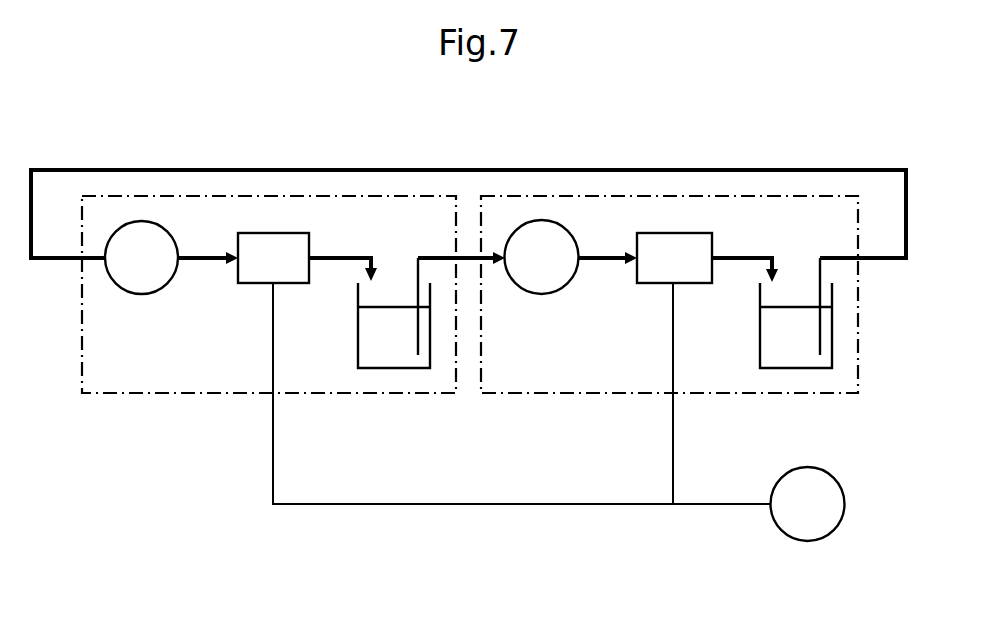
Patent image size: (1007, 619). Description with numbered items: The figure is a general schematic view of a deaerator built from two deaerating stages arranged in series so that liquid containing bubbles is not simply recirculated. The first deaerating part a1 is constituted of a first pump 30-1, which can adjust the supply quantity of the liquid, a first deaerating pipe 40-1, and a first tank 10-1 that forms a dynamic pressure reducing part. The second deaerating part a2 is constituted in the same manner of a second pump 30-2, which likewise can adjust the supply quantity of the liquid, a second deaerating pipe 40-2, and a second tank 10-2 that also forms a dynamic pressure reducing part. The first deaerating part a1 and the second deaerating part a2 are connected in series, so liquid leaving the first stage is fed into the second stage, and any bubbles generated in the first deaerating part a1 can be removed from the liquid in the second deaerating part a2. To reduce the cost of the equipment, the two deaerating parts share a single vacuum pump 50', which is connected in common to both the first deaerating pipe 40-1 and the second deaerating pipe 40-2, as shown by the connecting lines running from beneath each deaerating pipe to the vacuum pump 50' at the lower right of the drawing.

The first deaerating part a1 is at (162, 195).
The second deaerating part a2 is at (558, 195).
The first pump 30-1 is at (118, 290).
The first deaerating pipe 40-1 is at (252, 283).
The first tank 10-1 is at (367, 368).
The second pump 30-2 is at (520, 290).
The second deaerating pipe 40-2 is at (653, 283).
The second tank 10-2 is at (773, 368).
The vacuum pump 50' is at (859, 532).